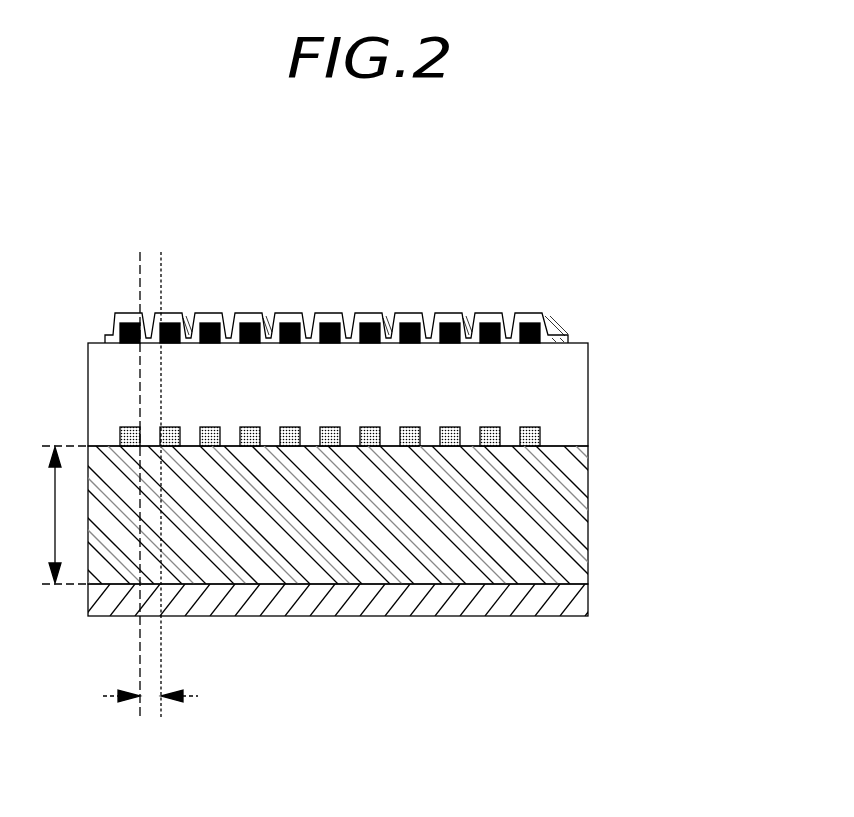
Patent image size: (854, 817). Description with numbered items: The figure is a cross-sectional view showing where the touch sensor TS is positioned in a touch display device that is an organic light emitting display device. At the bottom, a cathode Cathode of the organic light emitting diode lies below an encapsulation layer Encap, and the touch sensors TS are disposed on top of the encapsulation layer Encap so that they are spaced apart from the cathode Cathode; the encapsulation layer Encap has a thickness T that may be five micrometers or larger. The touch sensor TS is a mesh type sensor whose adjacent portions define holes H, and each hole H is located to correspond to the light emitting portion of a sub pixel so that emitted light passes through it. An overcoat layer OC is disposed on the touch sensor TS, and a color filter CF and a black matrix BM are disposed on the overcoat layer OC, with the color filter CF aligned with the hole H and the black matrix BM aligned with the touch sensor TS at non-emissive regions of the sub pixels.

The black matrix BM is at (540, 318).
The color filter CF is at (560, 313).
The overcoat layer OC is at (590, 368).
The touch sensor TS is at (118, 439).
The encapsulation layer Encap is at (590, 472).
The cathode Cathode is at (590, 600).
The thickness of the encapsulation layer T is at (58, 515).
The hole H is at (150, 505).